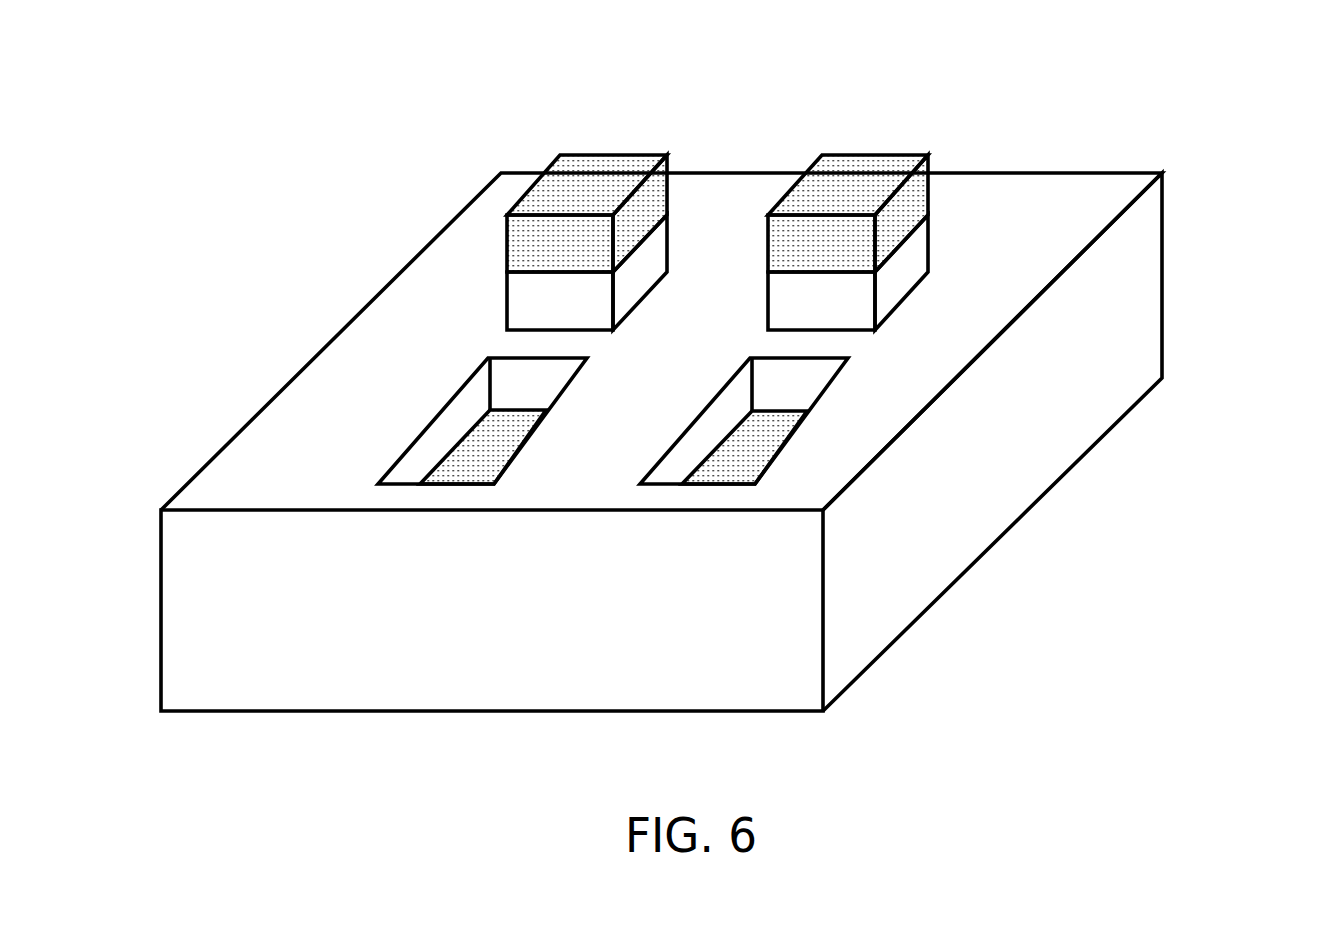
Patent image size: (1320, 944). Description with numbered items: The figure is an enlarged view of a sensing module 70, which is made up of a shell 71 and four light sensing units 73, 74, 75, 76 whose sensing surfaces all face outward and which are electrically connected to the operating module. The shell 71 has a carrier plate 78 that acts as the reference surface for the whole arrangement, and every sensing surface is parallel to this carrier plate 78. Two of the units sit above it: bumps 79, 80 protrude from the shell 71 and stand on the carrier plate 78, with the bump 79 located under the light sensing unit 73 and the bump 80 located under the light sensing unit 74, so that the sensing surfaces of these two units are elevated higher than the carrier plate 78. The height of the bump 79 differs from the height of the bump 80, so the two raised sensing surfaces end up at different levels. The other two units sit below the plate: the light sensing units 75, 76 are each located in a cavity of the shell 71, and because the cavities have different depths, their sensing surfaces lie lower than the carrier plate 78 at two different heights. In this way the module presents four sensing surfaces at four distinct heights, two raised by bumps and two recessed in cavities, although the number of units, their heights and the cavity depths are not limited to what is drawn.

The sensing module 70 is at (385, 74).
The shell 71 is at (1163, 273).
The light sensing unit 73 is at (857, 179).
The light sensing unit 74 is at (597, 179).
The light sensing unit 75 is at (763, 448).
The light sensing unit 76 is at (495, 443).
The carrier plate 78 is at (694, 356).
The bump 79 is at (908, 275).
The bump 80 is at (648, 275).